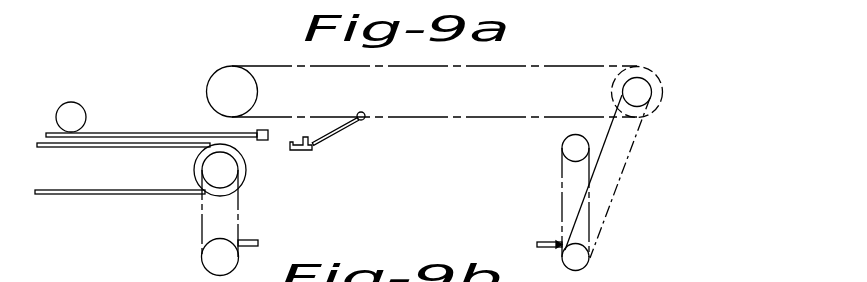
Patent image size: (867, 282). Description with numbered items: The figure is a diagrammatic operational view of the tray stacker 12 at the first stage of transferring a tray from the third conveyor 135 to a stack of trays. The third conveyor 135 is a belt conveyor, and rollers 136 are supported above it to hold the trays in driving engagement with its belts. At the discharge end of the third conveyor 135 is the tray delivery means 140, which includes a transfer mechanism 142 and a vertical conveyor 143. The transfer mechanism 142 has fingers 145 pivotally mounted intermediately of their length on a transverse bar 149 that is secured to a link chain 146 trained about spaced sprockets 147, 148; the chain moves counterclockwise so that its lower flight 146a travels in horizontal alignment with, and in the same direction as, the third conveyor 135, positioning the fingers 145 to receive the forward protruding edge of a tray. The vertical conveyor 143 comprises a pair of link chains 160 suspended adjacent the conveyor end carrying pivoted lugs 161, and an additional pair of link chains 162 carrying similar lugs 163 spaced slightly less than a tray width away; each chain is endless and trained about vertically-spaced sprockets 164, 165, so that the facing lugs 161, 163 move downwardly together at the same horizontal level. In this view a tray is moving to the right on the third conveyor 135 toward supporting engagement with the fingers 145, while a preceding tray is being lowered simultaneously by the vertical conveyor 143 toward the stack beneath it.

In FIG. 9A, the tray stacker 12 is at (630, 60).
In FIG. 9B, the tray stacker 12 is at (686, 281).
In FIG. 9A, the third conveyor 135 is at (103, 195).
In FIG. 9A, the rollers 136 is at (66, 103).
In FIG. 9A, the tray delivery means 140 is at (625, 191).
In FIG. 9A, the transfer mechanism 142 is at (535, 62).
In FIG. 9A, the vertical conveyor mechanism 143 is at (398, 202).
In FIG. 9A, the fingers 145 is at (318, 149).
In FIG. 9A, the link chain 146 is at (287, 64).
In FIG. 9A, the lower flight of link chain 146a is at (480, 84).
In FIG. 9A, the sprocket 147 is at (207, 68).
In FIG. 9A, the sprocket 148 is at (662, 90).
In FIG. 9A, the transverse bar 149 is at (364, 120).
In FIG. 9A, the link chains 160 is at (238, 207).
In FIG. 9A, the lugs 161 is at (258, 243).
In FIG. 9A, the link chains 162 is at (562, 182).
In FIG. 9A, the lugs 163 is at (537, 242).
In FIG. 9A, the sprocket 164 is at (201, 168).
In FIG. 9A, the sprocket 165 is at (200, 260).